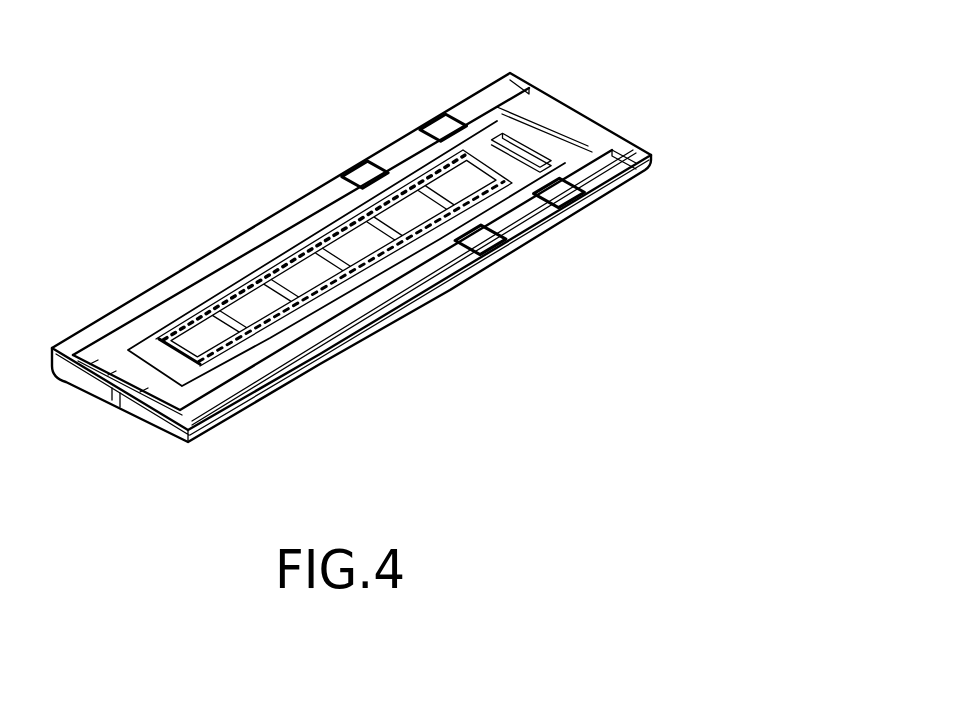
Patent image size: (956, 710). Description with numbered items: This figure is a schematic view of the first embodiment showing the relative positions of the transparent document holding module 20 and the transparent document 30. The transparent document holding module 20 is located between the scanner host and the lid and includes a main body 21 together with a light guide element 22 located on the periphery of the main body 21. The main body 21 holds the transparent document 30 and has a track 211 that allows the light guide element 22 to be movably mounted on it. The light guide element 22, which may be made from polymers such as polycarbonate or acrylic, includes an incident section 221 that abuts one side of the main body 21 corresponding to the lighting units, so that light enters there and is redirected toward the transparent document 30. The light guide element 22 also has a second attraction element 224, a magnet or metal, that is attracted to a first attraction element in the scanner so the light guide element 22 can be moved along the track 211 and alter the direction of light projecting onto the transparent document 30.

The transparent document holding module 20 is at (351, 249).
The main body 21 is at (570, 128).
The track 211 is at (387, 297).
The light guide element 22 is at (477, 199).
The incident section 221 is at (513, 233).
The second attraction element 224 is at (362, 186).
The transparent document 30 is at (198, 338).